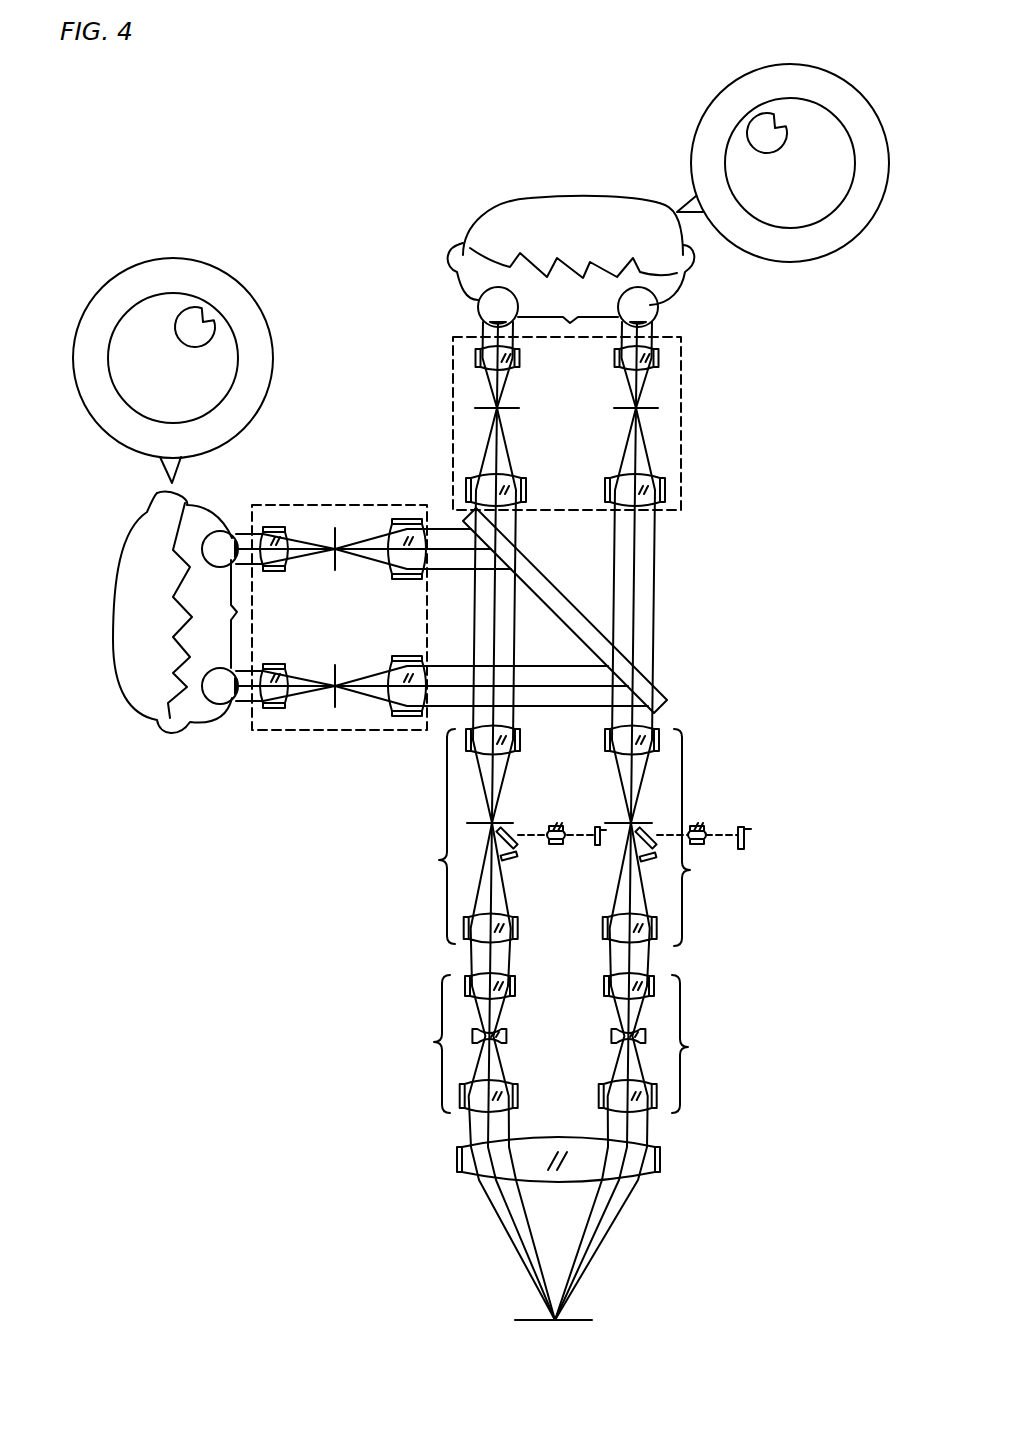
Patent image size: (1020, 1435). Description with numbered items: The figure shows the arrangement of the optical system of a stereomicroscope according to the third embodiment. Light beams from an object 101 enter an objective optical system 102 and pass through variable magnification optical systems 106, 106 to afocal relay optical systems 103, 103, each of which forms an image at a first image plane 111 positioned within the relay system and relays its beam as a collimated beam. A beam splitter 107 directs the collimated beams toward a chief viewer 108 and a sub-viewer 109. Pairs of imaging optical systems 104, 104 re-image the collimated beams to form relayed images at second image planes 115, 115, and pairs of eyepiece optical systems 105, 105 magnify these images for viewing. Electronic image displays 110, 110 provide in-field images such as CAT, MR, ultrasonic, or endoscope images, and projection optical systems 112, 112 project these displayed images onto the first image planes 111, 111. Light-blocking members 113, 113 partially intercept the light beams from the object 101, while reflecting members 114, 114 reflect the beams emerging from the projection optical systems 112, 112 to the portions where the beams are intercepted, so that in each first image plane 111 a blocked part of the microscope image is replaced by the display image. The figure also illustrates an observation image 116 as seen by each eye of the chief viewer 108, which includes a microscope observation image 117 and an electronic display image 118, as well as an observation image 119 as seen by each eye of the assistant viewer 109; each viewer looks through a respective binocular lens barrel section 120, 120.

The object 101 is at (590, 1320).
The objective optical system 102 is at (660, 1165).
The afocal relay optical system 103 is at (567, 836).
The imaging optical system 104 is at (527, 490).
The eyepiece optical system 105 is at (520, 357).
The variable magnification optical system 106 is at (562, 1043).
The beam splitter 107 is at (565, 612).
The chief viewer 108 is at (567, 218).
The sub-viewer 109 is at (128, 617).
The electronic image display 110 is at (598, 846).
The first image plane 111 is at (470, 822).
The projection optical system 112 is at (557, 822).
The light-blocking member 113 is at (517, 857).
The reflecting member 114 is at (503, 831).
The second image plane 115 is at (519, 405).
The observation image 116 is at (790, 80).
The microscope observation image 117 is at (481, 260).
The electronic display image 118 is at (175, 331).
The observation image 119 is at (173, 264).
The binocular lens barrel section 120 is at (682, 512).